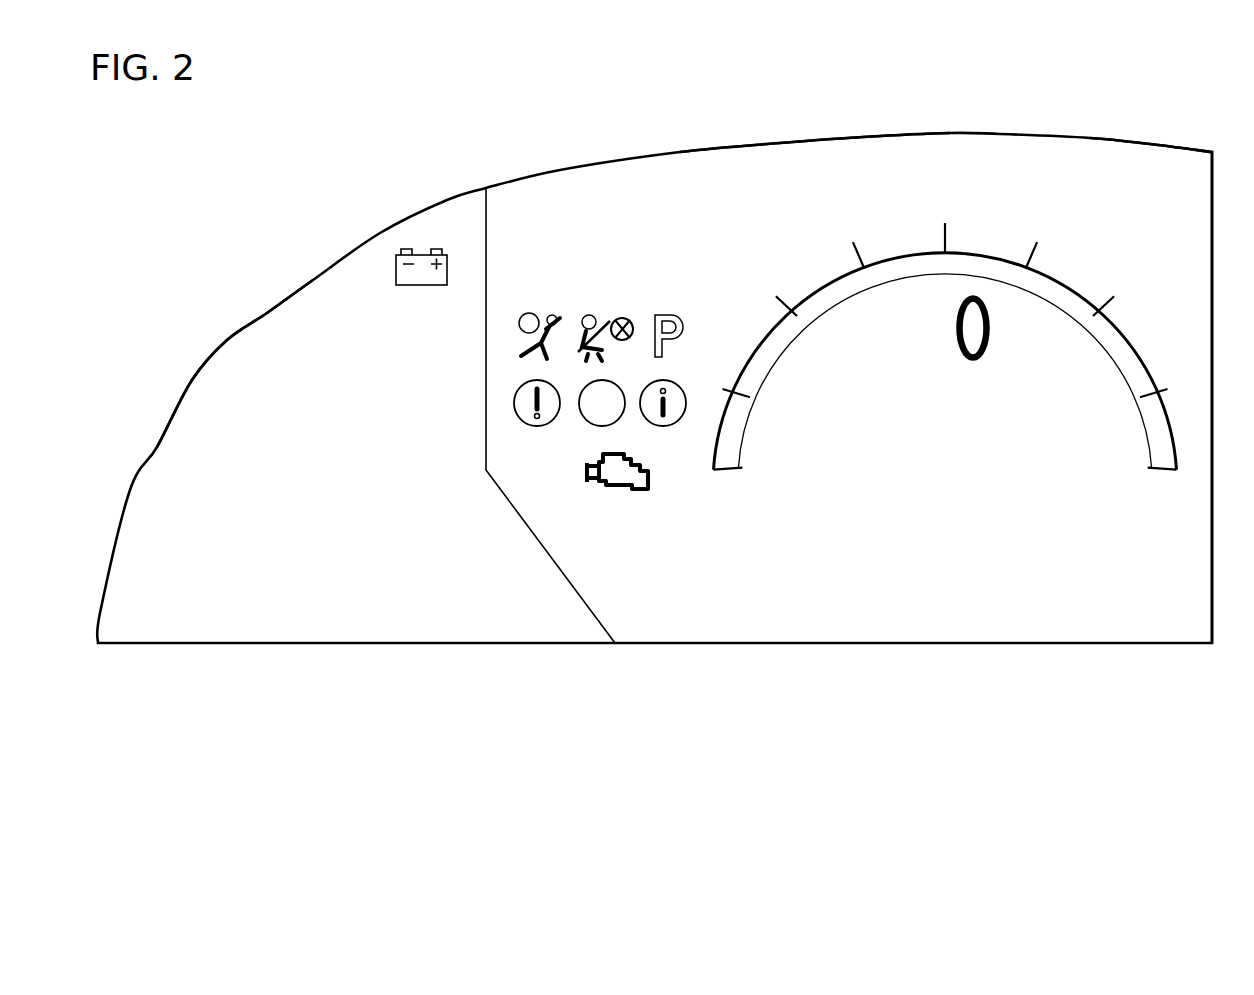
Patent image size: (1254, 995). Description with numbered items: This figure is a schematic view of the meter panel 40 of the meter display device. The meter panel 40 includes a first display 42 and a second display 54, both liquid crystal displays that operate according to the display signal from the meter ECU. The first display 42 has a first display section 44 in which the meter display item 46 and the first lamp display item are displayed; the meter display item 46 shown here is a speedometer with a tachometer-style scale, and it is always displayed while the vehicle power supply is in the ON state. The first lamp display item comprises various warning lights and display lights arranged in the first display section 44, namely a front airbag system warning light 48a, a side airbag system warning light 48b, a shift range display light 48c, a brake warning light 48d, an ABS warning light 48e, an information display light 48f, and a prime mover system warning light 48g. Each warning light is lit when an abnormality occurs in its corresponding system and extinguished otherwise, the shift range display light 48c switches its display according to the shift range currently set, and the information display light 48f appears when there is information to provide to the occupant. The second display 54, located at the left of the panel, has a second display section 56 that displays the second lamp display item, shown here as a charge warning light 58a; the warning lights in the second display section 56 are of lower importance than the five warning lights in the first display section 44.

The meter panel 40 is at (426, 103).
The first display 42 is at (1090, 137).
The first display section 44 is at (862, 158).
The meter display item 46 is at (975, 225).
The front airbag system warning light 48a is at (533, 310).
The side airbag system warning light 48b is at (606, 312).
The shift range display light 48c is at (666, 312).
The brake warning light 48d is at (514, 401).
The ABS warning light 48e is at (586, 420).
The information display light 48f is at (675, 425).
The prime mover system warning light 48g is at (615, 493).
The second display 54 is at (228, 340).
The second display section 56 is at (270, 317).
The charge warning light 58a is at (413, 287).